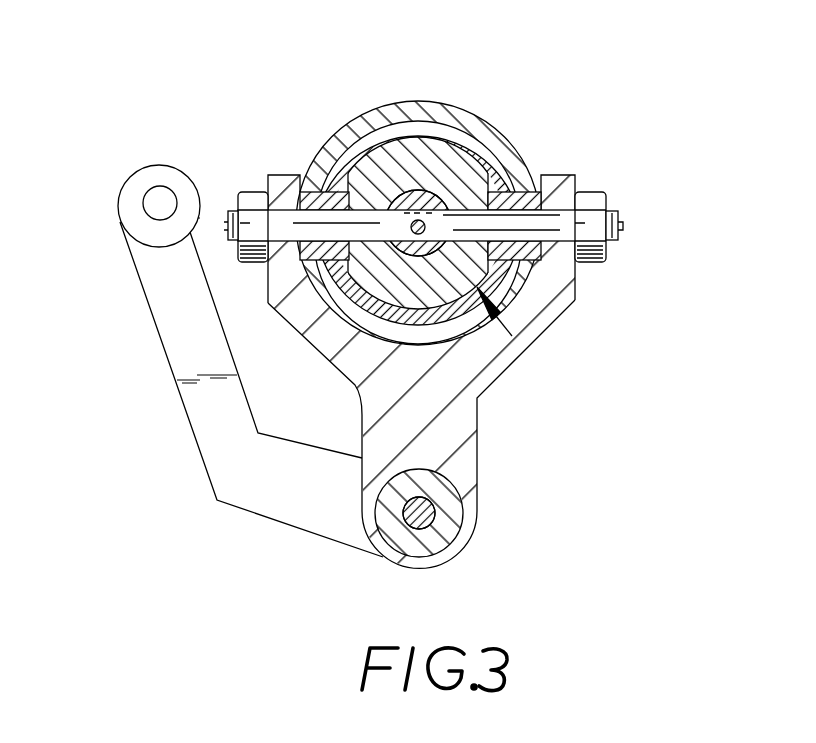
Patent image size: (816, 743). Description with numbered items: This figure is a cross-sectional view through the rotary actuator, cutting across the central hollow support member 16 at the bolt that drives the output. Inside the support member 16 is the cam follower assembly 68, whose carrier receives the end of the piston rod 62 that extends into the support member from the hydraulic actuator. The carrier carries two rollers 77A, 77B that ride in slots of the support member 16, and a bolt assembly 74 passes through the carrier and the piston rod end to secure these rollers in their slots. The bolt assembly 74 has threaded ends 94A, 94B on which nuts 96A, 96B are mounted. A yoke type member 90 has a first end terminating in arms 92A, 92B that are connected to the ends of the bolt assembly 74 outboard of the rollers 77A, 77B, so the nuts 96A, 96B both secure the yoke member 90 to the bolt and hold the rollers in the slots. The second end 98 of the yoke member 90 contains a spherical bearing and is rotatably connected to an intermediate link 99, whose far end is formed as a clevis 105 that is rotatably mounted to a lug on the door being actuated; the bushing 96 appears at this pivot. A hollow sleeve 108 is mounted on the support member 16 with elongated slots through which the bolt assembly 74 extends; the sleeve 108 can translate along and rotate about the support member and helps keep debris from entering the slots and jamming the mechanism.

The central hollow support member 16 is at (463, 132).
The piston rod 62 is at (410, 240).
The cam follower assembly 68 is at (470, 310).
The bolt assembly 74 is at (633, 237).
The roller 77A is at (334, 180).
The roller 77B is at (510, 282).
The yoke type member 90 is at (308, 336).
The arm 92A is at (286, 174).
The arm 92B is at (560, 175).
The threaded end 94A is at (229, 220).
The threaded end 94B is at (619, 218).
The bushing 96 is at (478, 520).
The nut 96A is at (252, 192).
The nut 96B is at (598, 192).
The second end of the yoke member 98 is at (456, 560).
The intermediate link 99 is at (165, 352).
The clevis 105 is at (133, 170).
The hollow sleeve 108 is at (410, 101).